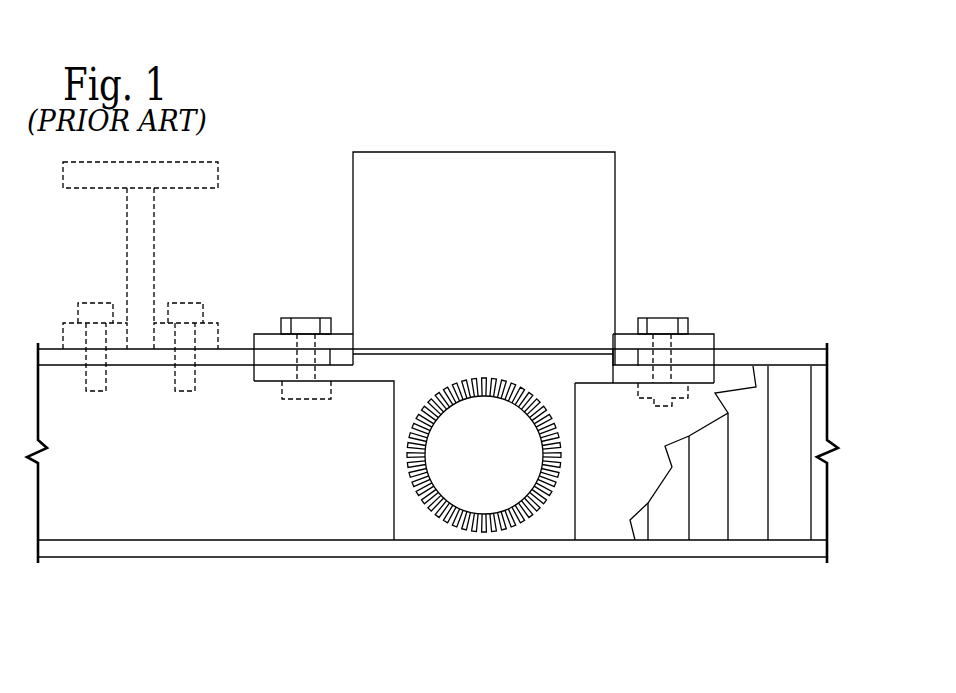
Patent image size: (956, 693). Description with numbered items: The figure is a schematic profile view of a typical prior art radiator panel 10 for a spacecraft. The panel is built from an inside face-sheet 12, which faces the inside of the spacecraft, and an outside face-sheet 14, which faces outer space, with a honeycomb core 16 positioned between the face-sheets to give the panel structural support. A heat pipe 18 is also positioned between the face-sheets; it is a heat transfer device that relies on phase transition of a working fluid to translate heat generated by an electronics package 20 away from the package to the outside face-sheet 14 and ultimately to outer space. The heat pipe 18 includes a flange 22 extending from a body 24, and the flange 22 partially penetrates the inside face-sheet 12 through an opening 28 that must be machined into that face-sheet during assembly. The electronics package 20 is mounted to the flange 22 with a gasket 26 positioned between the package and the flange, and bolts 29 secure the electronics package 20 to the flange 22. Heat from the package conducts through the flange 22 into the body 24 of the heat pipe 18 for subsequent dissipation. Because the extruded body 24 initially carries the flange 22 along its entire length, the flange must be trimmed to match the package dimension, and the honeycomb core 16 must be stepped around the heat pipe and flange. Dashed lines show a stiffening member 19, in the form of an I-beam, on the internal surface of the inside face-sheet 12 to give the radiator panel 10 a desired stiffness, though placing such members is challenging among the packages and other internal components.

The radiator panel 10 is at (783, 270).
The inside face-sheet 12 is at (797, 348).
The outside face-sheet 14 is at (717, 558).
The honeycomb core 16 is at (763, 481).
The heat pipe 18 is at (484, 459).
The stiffening member 19 is at (220, 177).
The electronics package 20 is at (525, 146).
The flange 22 is at (627, 384).
The body 24 is at (576, 440).
The gasket 26 is at (520, 349).
The opening 28 is at (625, 355).
The bolts 29 is at (305, 316).